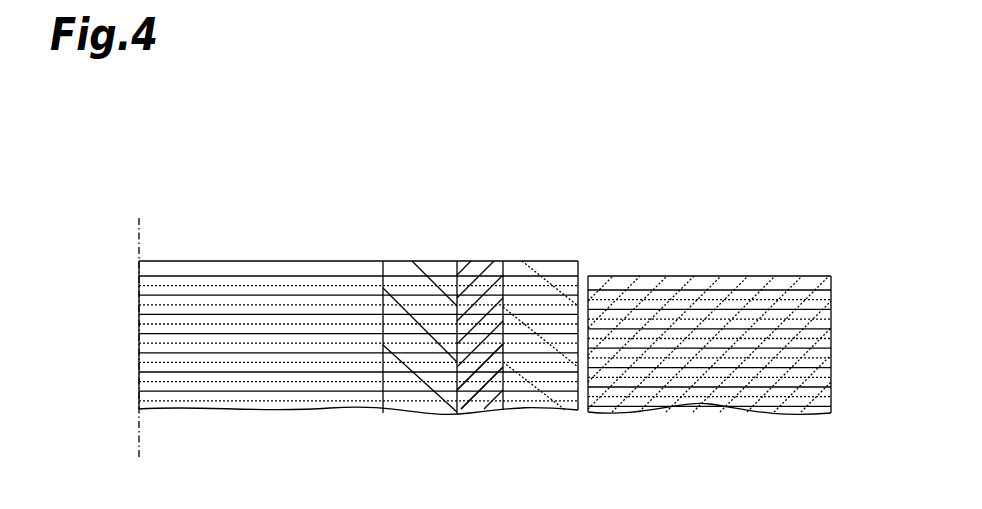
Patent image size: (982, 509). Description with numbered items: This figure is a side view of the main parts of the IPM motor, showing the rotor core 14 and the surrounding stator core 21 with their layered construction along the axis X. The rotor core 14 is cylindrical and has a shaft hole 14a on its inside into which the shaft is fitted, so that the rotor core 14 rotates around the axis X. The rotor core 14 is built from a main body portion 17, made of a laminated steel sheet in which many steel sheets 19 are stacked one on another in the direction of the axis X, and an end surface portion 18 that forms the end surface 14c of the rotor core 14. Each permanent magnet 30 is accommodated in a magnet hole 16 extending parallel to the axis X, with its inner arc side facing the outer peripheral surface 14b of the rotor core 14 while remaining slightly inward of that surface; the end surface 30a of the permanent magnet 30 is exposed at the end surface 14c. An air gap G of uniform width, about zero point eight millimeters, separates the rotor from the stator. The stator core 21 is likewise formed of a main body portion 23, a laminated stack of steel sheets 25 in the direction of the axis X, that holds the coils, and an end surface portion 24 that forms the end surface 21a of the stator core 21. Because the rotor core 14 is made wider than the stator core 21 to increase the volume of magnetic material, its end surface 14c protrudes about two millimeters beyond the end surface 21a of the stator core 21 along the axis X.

The axis X is at (140, 238).
The rotor core 14 is at (332, 340).
The shaft hole 14a is at (383, 386).
The outer peripheral surface of the rotor core 14b is at (580, 392).
The end surface of the rotor core 14c is at (255, 261).
The magnet hole 16 is at (471, 388).
The main body portion 17 is at (126, 277).
The end surface portion 18 is at (138, 270).
The steel sheet 19 is at (298, 377).
The stator core 21 is at (760, 351).
The end surface of the stator core 21a is at (673, 276).
The main body portion of the stator core 23 is at (838, 290).
The end surface portion of the stator core 24 is at (831, 282).
The steel sheet 25 is at (767, 383).
The permanent magnet 30 is at (491, 341).
The end surface of the permanent magnet 30a is at (485, 261).
The air gap G is at (583, 277).